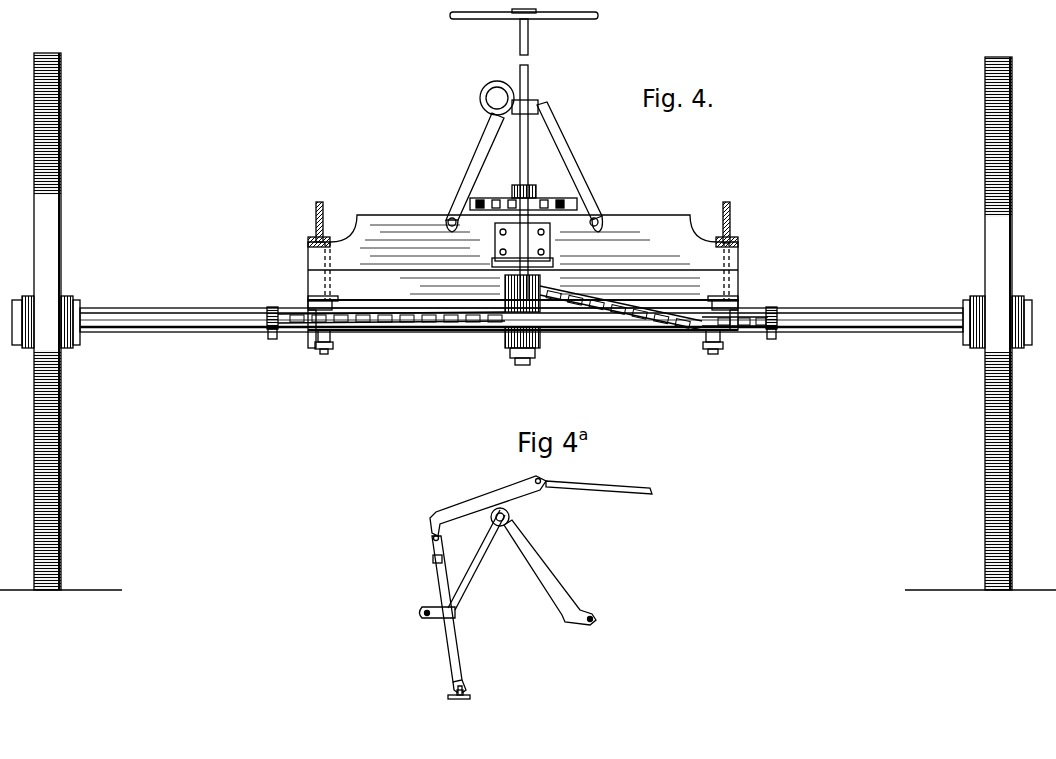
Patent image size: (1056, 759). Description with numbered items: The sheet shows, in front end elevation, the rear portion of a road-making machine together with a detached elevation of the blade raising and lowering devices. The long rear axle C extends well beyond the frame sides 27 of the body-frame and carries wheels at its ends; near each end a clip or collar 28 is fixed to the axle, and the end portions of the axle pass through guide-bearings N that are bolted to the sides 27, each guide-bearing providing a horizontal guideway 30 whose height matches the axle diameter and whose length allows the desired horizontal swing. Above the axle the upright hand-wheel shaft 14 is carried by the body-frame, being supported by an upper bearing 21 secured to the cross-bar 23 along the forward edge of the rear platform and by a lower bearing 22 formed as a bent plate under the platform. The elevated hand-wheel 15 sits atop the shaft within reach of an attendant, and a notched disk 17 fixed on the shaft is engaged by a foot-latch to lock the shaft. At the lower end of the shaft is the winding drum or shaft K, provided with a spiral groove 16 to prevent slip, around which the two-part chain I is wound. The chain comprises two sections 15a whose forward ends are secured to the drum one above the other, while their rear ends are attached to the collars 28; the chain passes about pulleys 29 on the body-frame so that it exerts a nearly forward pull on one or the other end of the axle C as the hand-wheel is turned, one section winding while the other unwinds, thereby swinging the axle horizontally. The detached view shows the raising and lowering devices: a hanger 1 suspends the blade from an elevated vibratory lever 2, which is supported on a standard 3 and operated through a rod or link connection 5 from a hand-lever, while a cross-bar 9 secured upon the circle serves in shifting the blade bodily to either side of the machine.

In FIG. 4, the hand-wheel 15 is at (600, 30).
In FIG. 4, the hand-wheel shaft 14 is at (530, 164).
In FIG. 4, the notched disk 17 is at (498, 198).
In FIG. 4, the sides of the body-frame 27 is at (314, 216).
In FIG. 4, the bearing 21 is at (552, 246).
In FIG. 4, the cross-bar 23 is at (523, 261).
In FIG. 4, the rear axle C is at (522, 317).
In FIG. 4, the guide-bearings N is at (310, 304).
In FIG. 4, the spiral groove 16 is at (505, 290).
In FIG. 4, the horizontal guideway 30 is at (312, 338).
In FIG. 4, the clips or collars 28 is at (272, 336).
In FIG. 4, the pulleys 29 is at (334, 342).
In FIG. 4, the two-part chain I is at (404, 332).
In FIG. 4, the chain sections 15a is at (443, 325).
In FIG. 4, the winding drum or shaft K is at (505, 338).
In FIG. 4, the bearing 22 is at (535, 358).
In FIG. 4A, the vibratory lever 2 is at (480, 500).
In FIG. 4A, the rod or link connection 5 is at (622, 486).
In FIG. 4A, the standard 3 is at (546, 574).
In FIG. 4A, the hanger 1 is at (454, 640).
In FIG. 4A, the cross-bar 9 is at (458, 700).